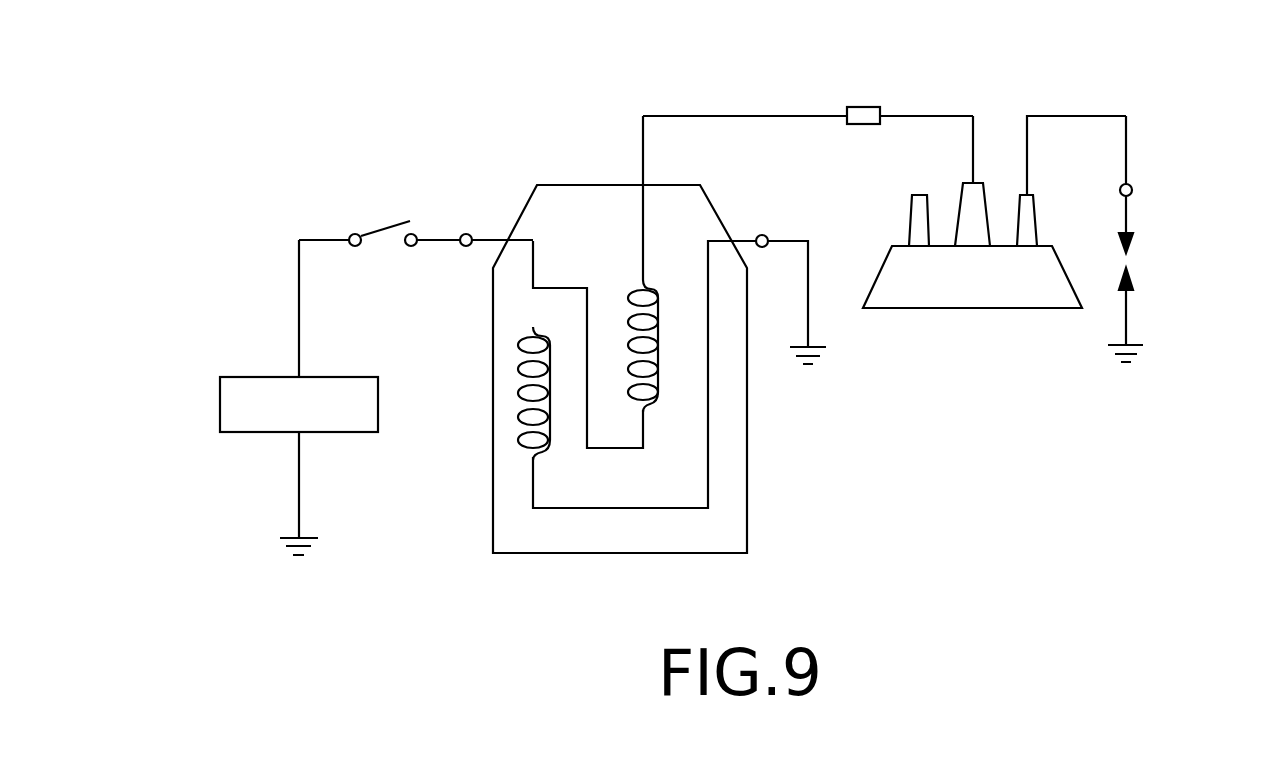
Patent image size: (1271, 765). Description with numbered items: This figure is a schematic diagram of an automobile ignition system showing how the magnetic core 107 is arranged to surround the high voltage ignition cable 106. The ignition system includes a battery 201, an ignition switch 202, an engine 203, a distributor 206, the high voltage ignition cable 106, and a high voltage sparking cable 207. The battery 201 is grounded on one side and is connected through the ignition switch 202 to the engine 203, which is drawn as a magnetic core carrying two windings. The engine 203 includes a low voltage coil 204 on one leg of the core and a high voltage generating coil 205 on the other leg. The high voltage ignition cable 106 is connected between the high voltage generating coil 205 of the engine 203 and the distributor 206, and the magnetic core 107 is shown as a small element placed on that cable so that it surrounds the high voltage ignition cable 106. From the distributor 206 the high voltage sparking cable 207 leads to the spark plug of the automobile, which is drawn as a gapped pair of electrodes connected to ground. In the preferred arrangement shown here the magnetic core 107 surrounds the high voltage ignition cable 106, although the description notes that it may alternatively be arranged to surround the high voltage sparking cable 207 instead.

The high voltage ignition cable 106 is at (764, 113).
The magnetic core 107 is at (864, 112).
The battery 201 is at (268, 382).
The ignition switch 202 is at (390, 223).
The engine 203 is at (748, 503).
The low voltage coil 204 is at (518, 443).
The high voltage generating coil 205 is at (658, 392).
The distributor 206 is at (970, 298).
The high voltage sparking cable 207 is at (1127, 147).